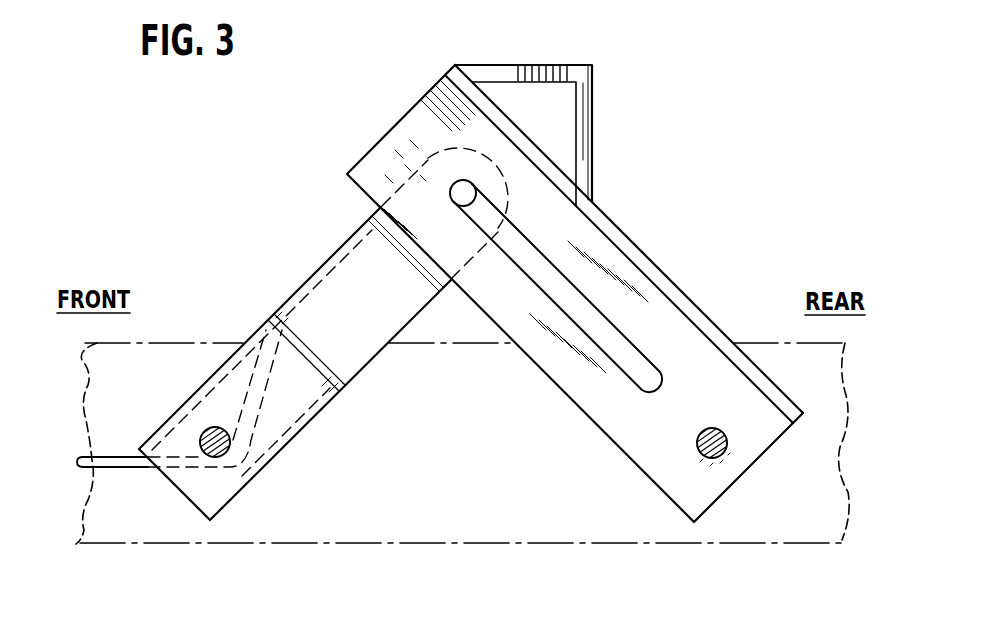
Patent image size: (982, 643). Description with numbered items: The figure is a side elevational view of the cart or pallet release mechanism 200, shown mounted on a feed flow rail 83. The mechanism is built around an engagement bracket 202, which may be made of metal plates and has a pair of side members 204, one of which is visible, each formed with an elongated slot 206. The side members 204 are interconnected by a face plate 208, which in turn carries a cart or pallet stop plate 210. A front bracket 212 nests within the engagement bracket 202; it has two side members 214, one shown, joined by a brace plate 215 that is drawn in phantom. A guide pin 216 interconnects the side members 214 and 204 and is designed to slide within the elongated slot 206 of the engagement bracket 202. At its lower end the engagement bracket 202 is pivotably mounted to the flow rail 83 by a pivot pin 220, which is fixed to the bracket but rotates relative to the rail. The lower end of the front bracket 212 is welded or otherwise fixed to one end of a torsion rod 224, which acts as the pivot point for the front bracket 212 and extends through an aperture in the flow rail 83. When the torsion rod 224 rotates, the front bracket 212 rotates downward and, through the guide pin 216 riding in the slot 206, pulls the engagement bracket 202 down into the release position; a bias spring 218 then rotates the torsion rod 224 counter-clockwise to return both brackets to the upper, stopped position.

The feed flow rail 83 is at (827, 537).
The release mechanism 200 is at (688, 210).
The engagement bracket 202 is at (662, 265).
The side member 204 is at (605, 418).
The elongated slot 206 is at (647, 367).
The face plate 208 is at (610, 226).
The stop plate 210 is at (597, 136).
The front bracket 212 is at (334, 263).
The side member 214 is at (278, 424).
The brace plate 215 is at (360, 381).
The guide pin 216 is at (468, 181).
The bias spring 218 is at (112, 455).
The pivot pin 220 is at (697, 443).
The torsion rod 224 is at (188, 458).